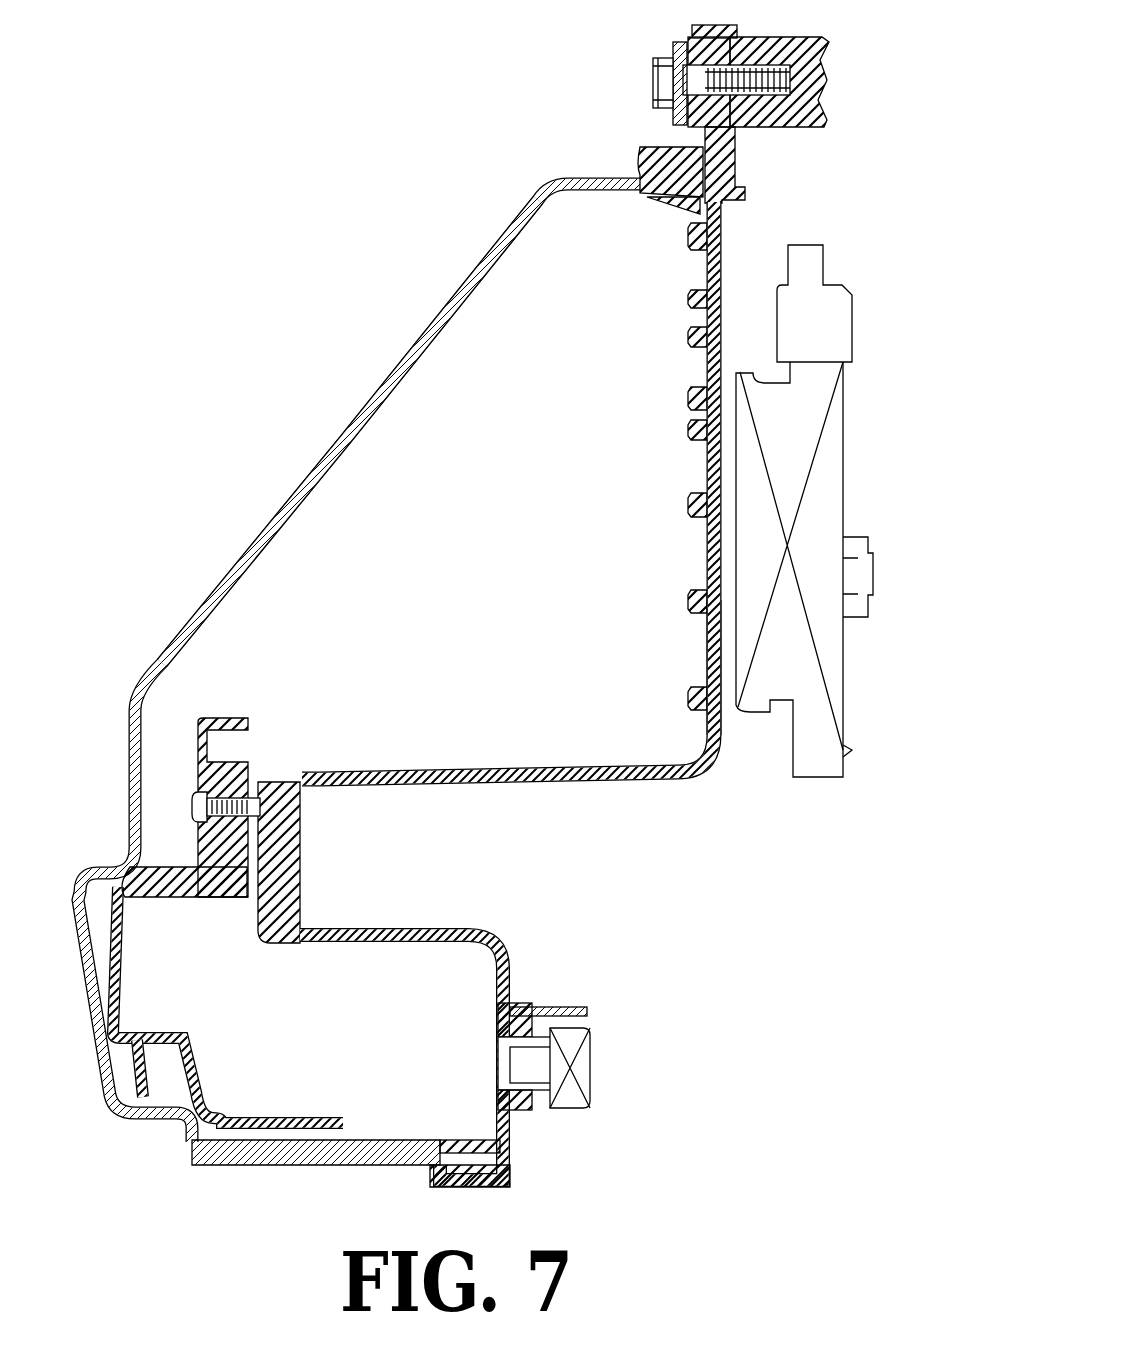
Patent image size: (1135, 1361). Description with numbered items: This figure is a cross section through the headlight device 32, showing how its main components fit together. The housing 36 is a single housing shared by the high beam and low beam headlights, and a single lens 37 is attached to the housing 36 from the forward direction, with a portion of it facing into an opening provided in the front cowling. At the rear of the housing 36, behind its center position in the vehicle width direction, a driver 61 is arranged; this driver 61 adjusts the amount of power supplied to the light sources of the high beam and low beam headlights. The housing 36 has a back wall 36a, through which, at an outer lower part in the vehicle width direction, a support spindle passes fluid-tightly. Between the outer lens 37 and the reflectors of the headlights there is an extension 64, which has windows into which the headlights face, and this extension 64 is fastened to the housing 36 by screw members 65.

The headlight device 32 is at (390, 656).
The lens 37 is at (374, 393).
The housing 36 is at (471, 606).
The back wall 36a is at (714, 630).
The driver 61 is at (830, 484).
The extension 64 is at (236, 716).
The screw member 65 is at (200, 806).